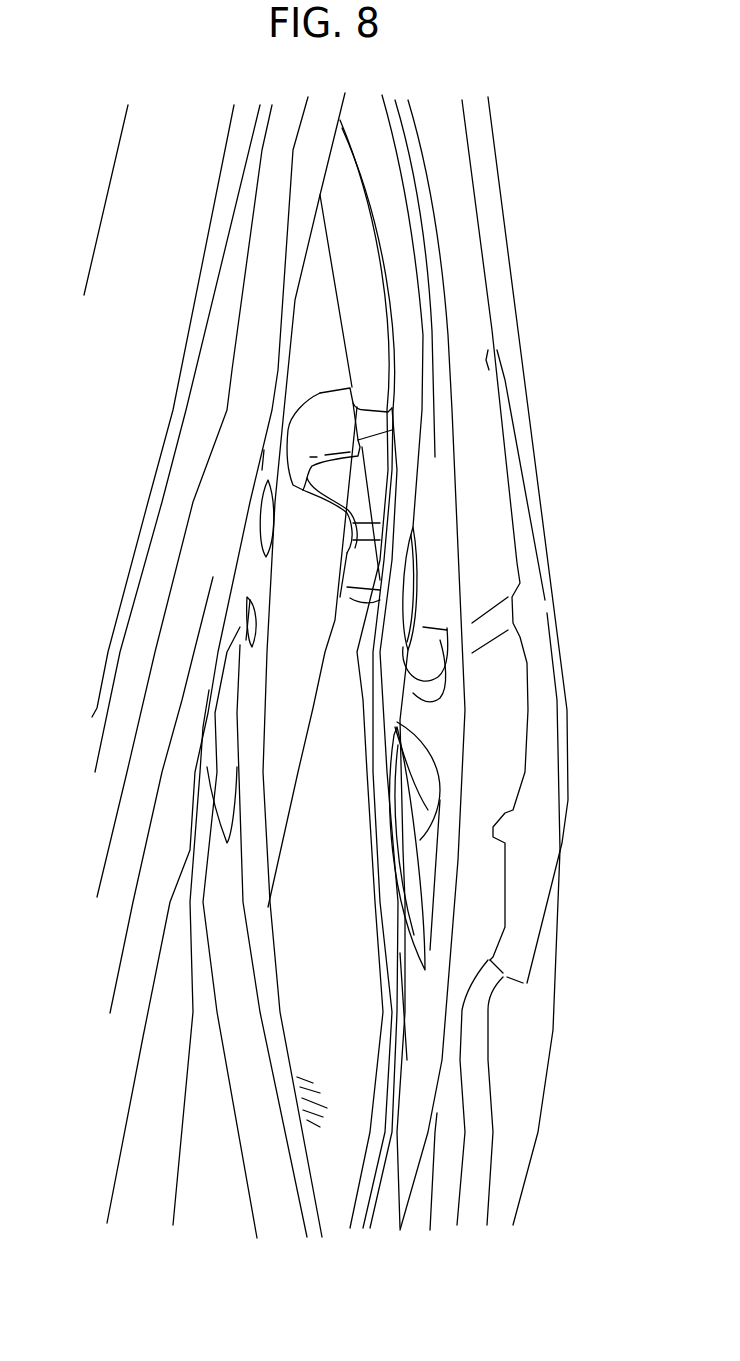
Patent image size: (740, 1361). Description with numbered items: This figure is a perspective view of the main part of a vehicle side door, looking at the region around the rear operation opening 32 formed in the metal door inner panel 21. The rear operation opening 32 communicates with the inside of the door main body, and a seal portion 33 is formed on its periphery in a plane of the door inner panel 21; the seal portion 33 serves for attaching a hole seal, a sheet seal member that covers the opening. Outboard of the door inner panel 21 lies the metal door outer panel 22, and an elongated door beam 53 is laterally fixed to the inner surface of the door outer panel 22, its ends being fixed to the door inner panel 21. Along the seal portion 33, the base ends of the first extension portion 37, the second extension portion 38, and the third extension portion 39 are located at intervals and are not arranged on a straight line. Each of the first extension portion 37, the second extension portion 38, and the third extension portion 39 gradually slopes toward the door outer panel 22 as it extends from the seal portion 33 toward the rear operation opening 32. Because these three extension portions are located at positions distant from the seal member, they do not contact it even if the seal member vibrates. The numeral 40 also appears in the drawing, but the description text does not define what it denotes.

The door inner panel 21 is at (513, 285).
The door outer panel 22 is at (322, 1129).
The rear operation opening 32 is at (344, 802).
The seal portion 33 is at (466, 718).
The first extension portion 37 is at (407, 585).
The second extension portion 38 is at (395, 768).
The third extension portion 39 is at (378, 911).
The gap 40 is at (396, 687).
The door beam 53 is at (297, 820).